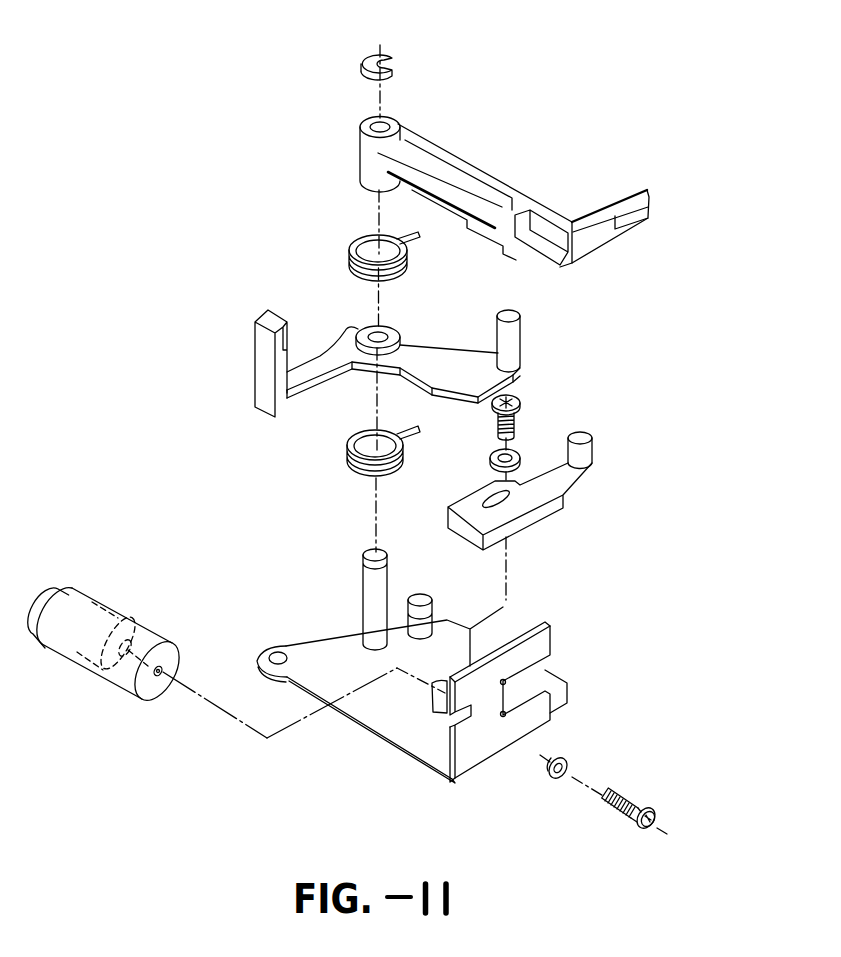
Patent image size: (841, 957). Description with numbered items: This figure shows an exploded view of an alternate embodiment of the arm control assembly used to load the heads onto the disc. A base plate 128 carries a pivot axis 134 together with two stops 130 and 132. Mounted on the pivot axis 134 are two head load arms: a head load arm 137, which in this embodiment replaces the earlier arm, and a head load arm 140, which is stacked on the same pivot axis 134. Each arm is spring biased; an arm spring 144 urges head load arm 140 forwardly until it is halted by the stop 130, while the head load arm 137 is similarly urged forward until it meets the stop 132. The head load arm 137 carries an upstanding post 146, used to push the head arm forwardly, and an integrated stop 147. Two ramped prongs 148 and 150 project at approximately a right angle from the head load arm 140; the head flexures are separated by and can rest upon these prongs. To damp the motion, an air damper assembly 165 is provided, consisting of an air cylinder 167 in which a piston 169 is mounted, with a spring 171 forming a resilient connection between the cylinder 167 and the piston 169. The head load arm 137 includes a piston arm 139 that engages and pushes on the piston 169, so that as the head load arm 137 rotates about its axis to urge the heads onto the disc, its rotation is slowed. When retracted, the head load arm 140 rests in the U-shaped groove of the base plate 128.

The base plate 128 is at (378, 737).
The stop 130 is at (593, 460).
The stop 132 is at (432, 598).
The pivot axis 134 is at (362, 591).
The head load arm 137 is at (382, 371).
The piston arm 139 is at (253, 387).
The head load arm 140 is at (525, 162).
The arm spring 144 is at (352, 243).
The upstanding post 146 is at (521, 326).
The integrated stop 147 is at (357, 324).
The ramped prong 148 is at (631, 205).
The ramped prong 150 is at (632, 236).
The air damper assembly 165 is at (147, 669).
The air cylinder 167 is at (120, 611).
The piston 169 is at (63, 582).
The spring 171 is at (163, 637).